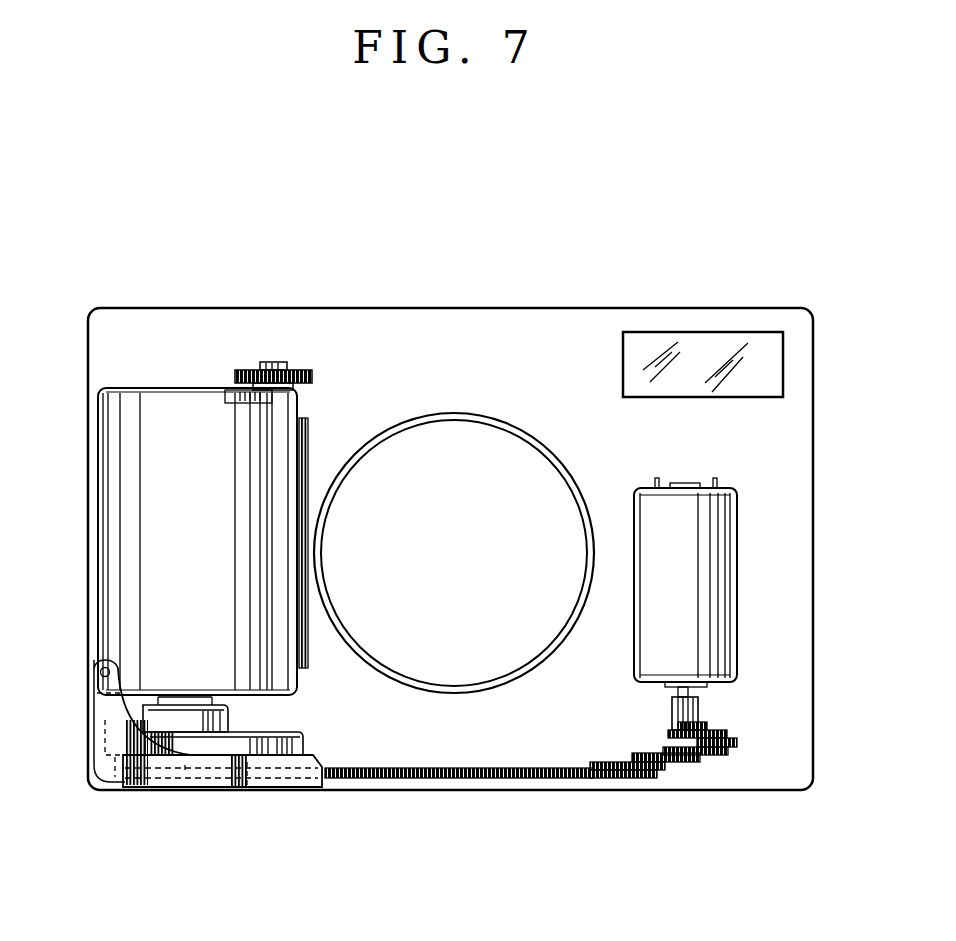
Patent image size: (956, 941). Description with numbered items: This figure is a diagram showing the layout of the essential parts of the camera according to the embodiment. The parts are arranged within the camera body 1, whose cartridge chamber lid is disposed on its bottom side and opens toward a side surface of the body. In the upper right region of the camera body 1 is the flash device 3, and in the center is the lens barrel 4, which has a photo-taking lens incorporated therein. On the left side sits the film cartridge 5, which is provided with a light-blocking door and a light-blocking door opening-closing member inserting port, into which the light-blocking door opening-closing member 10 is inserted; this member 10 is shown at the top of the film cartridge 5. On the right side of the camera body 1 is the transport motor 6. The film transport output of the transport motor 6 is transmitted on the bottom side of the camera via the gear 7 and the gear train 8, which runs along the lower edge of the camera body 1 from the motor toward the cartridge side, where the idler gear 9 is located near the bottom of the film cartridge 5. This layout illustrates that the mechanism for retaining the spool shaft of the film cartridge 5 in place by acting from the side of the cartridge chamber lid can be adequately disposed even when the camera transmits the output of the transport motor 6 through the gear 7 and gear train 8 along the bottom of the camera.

The camera body 1 is at (470, 325).
The flash device 3 is at (703, 343).
The lens barrel 4 is at (408, 437).
The film cartridge 5 is at (128, 505).
The transport motor 6 is at (703, 538).
The gear 7 is at (700, 705).
The gear train 8 is at (298, 803).
The idler gear 9 is at (280, 773).
The light-blocking door opening-closing member 10 is at (273, 362).